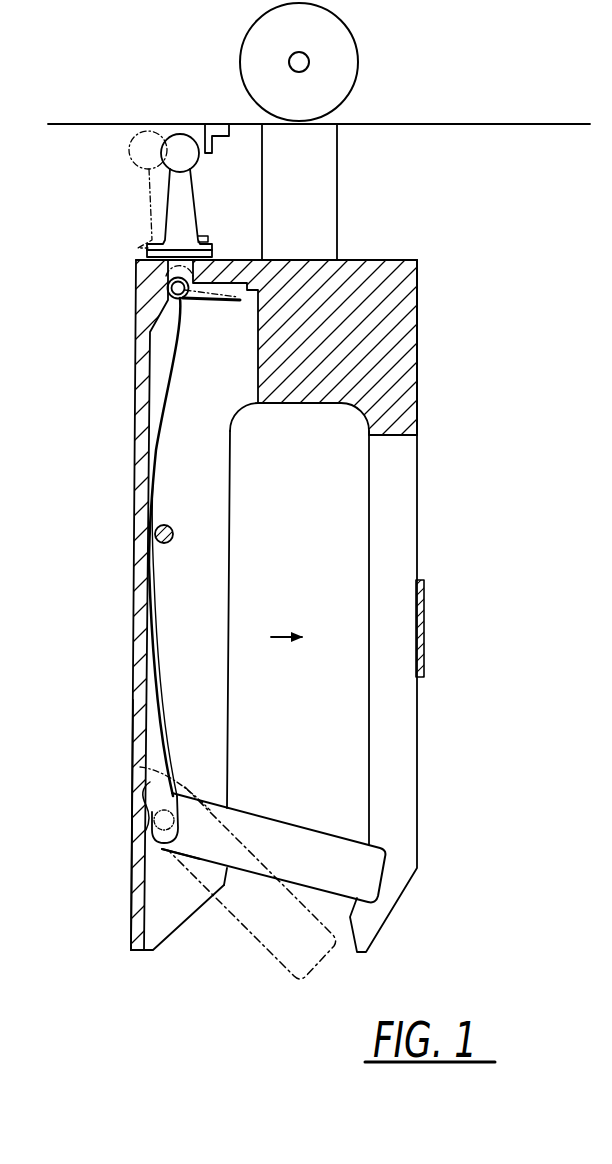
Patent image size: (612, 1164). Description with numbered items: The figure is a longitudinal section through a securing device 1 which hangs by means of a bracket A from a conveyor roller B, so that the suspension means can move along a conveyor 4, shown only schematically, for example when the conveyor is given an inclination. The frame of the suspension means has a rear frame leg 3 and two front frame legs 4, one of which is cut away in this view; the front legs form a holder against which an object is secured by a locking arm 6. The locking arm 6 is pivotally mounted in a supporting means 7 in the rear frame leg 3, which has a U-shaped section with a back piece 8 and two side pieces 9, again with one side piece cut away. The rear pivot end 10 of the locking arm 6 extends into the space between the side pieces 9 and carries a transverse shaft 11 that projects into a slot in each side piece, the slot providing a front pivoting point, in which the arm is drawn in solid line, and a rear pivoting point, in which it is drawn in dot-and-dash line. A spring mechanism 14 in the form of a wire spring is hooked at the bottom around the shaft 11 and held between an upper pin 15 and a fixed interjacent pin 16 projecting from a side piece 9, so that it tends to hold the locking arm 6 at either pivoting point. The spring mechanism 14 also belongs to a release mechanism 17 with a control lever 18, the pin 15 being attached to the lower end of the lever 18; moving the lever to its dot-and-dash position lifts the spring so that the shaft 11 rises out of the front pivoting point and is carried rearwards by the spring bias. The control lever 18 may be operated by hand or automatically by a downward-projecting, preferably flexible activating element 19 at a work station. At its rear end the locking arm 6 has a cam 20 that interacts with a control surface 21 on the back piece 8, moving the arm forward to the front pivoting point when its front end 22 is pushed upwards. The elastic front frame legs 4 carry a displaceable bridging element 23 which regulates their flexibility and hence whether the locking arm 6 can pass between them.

The securing device 1 is at (125, 631).
The rear frame leg 3 is at (128, 600).
The front frame leg 4 is at (527, 124).
The locking arm 6 is at (337, 852).
The supporting means 7 is at (140, 882).
The back piece 8 is at (130, 712).
The side piece 9 is at (187, 655).
The pivot end 10 is at (152, 819).
The transverse shaft 11 is at (154, 850).
The spring mechanism 14 is at (164, 507).
The upper pin 15 is at (163, 306).
The fixed interjacent pin 16 is at (155, 537).
The release mechanism 17 is at (140, 240).
The control lever 18 is at (178, 212).
The activating element 19 is at (203, 125).
The cam 20 is at (140, 767).
The control surface 21 is at (148, 783).
The front end 22 is at (373, 877).
The bridging element 23 is at (425, 617).
The bracket A is at (328, 217).
The conveyor roller B is at (343, 64).